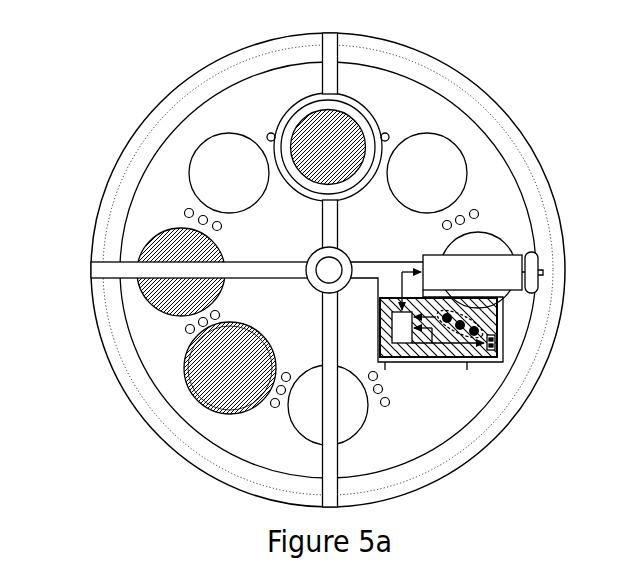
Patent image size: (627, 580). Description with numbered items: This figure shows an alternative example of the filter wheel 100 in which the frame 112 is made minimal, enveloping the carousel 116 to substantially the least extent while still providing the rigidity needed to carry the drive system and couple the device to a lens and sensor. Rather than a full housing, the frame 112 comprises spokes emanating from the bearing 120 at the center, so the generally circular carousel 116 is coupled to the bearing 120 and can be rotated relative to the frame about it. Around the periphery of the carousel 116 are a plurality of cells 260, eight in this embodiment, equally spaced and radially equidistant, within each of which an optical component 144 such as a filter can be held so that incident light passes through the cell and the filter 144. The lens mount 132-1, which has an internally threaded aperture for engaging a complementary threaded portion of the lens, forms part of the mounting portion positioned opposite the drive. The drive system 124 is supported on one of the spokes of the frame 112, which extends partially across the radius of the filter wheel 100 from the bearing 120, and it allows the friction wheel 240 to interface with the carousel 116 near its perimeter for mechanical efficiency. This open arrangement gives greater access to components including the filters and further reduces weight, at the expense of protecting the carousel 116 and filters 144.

The filter wheel 100 is at (514, 88).
The frame 112 is at (107, 270).
The carousel 116 is at (190, 122).
The bearing 120 is at (330, 270).
The drive system 124 is at (418, 240).
The lens mount 132-1 is at (302, 112).
The optical component 144 is at (205, 293).
The friction wheel 240 is at (526, 252).
The cell 260 is at (358, 432).